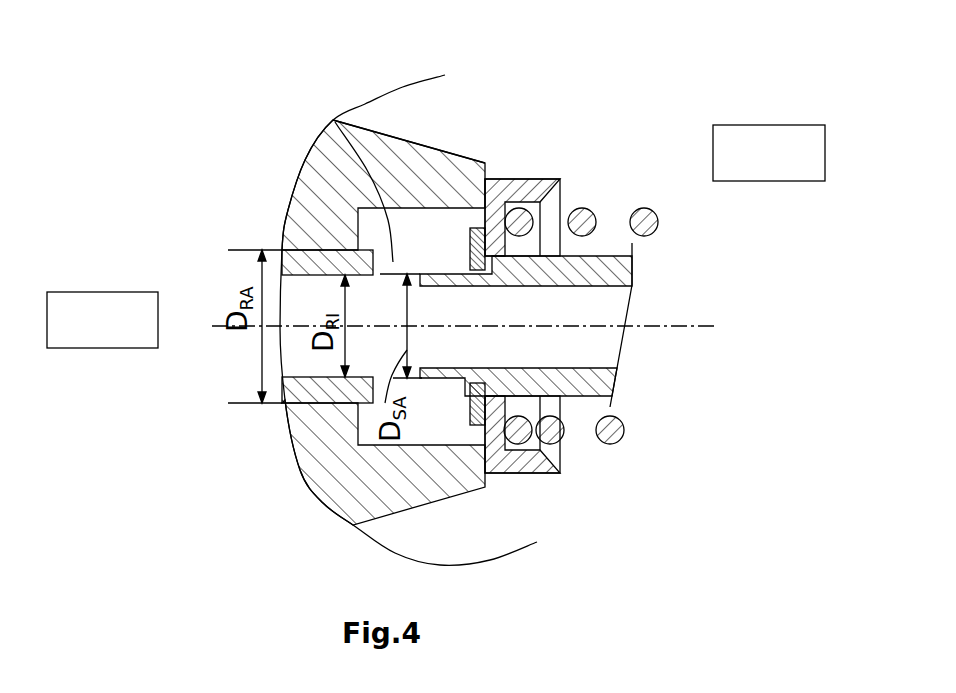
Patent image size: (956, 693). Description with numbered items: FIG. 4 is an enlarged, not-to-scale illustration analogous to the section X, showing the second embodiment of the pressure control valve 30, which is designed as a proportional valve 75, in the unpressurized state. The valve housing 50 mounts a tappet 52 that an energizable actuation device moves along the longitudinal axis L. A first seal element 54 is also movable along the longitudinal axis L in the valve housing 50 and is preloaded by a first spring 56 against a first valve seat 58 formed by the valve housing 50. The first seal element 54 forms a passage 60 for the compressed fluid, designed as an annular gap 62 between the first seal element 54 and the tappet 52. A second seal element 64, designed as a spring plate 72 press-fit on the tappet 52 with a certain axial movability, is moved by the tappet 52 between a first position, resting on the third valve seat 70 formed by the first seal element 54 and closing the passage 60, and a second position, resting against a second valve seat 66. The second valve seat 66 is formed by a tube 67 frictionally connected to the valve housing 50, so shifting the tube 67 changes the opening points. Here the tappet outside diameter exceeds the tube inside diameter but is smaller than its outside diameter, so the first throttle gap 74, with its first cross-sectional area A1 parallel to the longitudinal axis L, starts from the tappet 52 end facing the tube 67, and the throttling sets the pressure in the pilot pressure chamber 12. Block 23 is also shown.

The pilot pressure chamber 12 is at (92, 292).
The component block 23 is at (773, 125).
The pressure control valve 30 is at (165, 79).
The proportional valve 75 is at (212, 127).
The valve housing 50 is at (437, 168).
The tappet 52 is at (574, 465).
The first seal element 54 is at (533, 180).
The first spring 56 is at (643, 207).
The first valve seat 58 is at (517, 473).
The passage 60 is at (587, 397).
The annular gap 62 is at (587, 397).
The second seal element 64 is at (518, 456).
The spring plate 72 is at (470, 408).
The second valve seat 66 is at (375, 272).
The tube 67 is at (295, 397).
The third valve seat 70 is at (478, 226).
The throttle gap 74 is at (361, 109).
The first cross-sectional area A1 is at (333, 120).
The longitudinal axis L is at (700, 327).
The section X is at (202, 492).